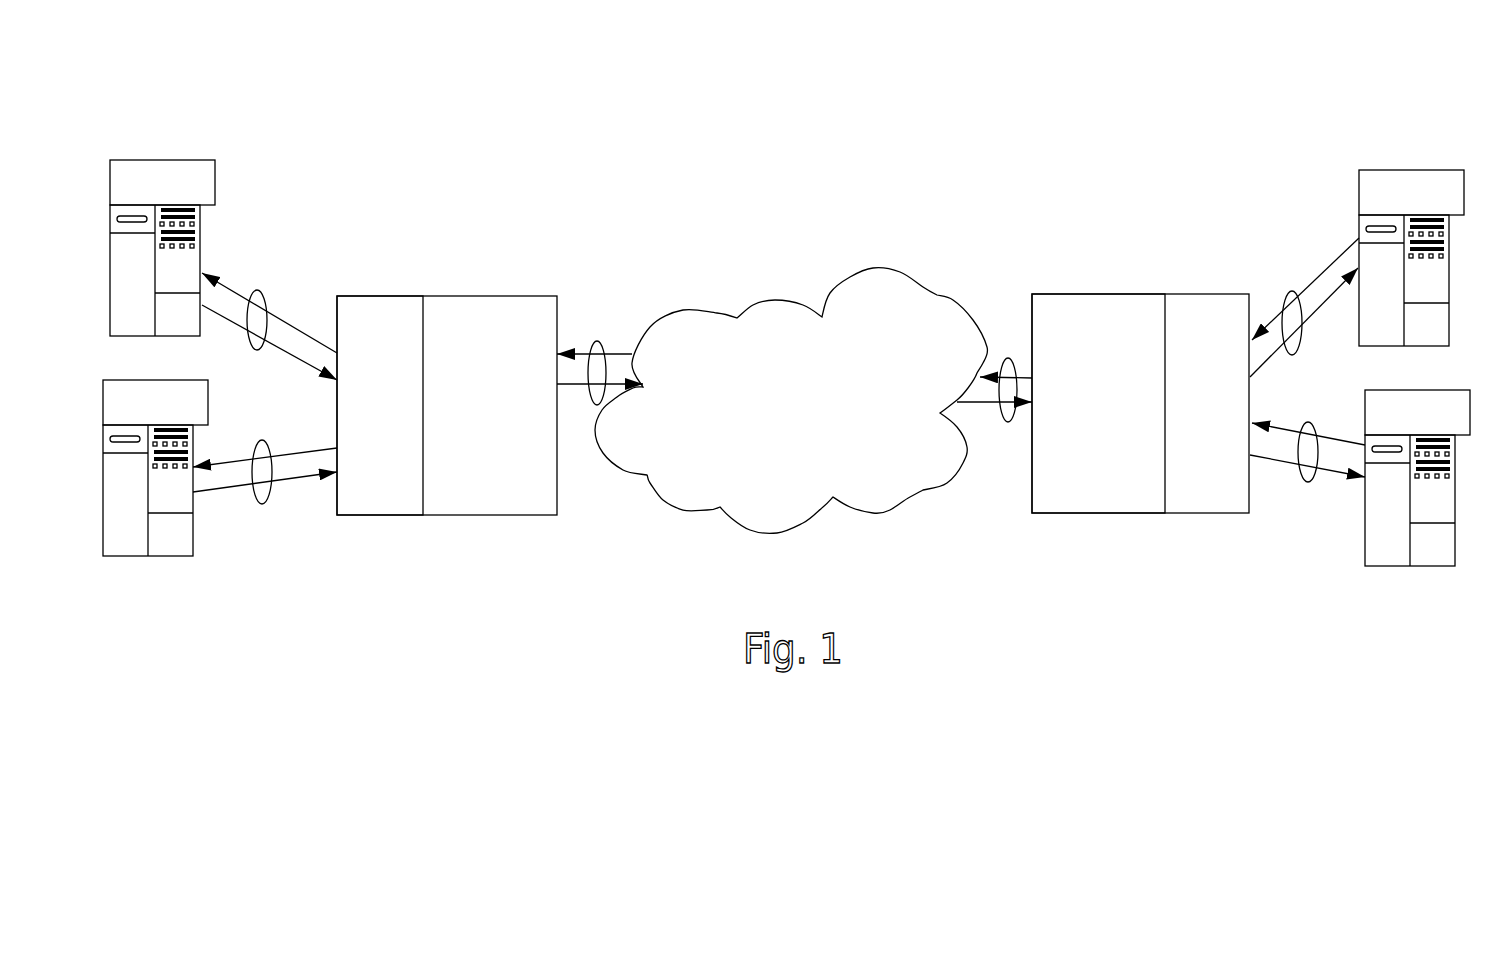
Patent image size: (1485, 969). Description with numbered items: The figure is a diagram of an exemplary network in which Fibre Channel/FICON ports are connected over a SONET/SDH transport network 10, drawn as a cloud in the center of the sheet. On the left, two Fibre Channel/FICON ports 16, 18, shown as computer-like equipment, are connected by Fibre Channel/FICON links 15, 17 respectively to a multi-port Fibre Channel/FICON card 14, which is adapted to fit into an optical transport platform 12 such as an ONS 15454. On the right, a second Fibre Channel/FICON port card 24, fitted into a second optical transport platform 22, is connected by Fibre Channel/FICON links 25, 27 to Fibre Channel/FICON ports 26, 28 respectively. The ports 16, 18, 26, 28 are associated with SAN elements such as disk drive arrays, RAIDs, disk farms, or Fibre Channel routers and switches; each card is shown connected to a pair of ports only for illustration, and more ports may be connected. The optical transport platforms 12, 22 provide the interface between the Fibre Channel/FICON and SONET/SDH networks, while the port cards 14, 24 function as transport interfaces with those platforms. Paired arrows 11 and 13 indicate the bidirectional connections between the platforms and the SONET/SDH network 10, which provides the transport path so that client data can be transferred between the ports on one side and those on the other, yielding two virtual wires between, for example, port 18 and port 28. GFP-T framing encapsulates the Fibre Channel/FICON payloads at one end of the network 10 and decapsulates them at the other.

The SONET/SDH transport network 10 is at (793, 302).
The optical link 11 is at (603, 343).
The optical transport platform 12 is at (492, 296).
The optical link 13 is at (1015, 425).
The multi-port Fibre Channel/FICON card 14 is at (380, 296).
The Fibre Channel/FICON link 15 is at (268, 490).
The Fibre Channel/FICON port 16 is at (222, 537).
The Fibre Channel/FICON link 17 is at (269, 302).
The Fibre Channel/FICON port 18 is at (230, 160).
The optical transport platform 22 is at (1098, 300).
The Fibre Channel/FICON port card 24 is at (1207, 300).
The Fibre Channel/FICON link 25 is at (1308, 482).
The Fibre Channel/FICON port 26 is at (1338, 532).
The Fibre Channel/FICON link 27 is at (1293, 288).
The Fibre Channel/FICON port 28 is at (1370, 152).